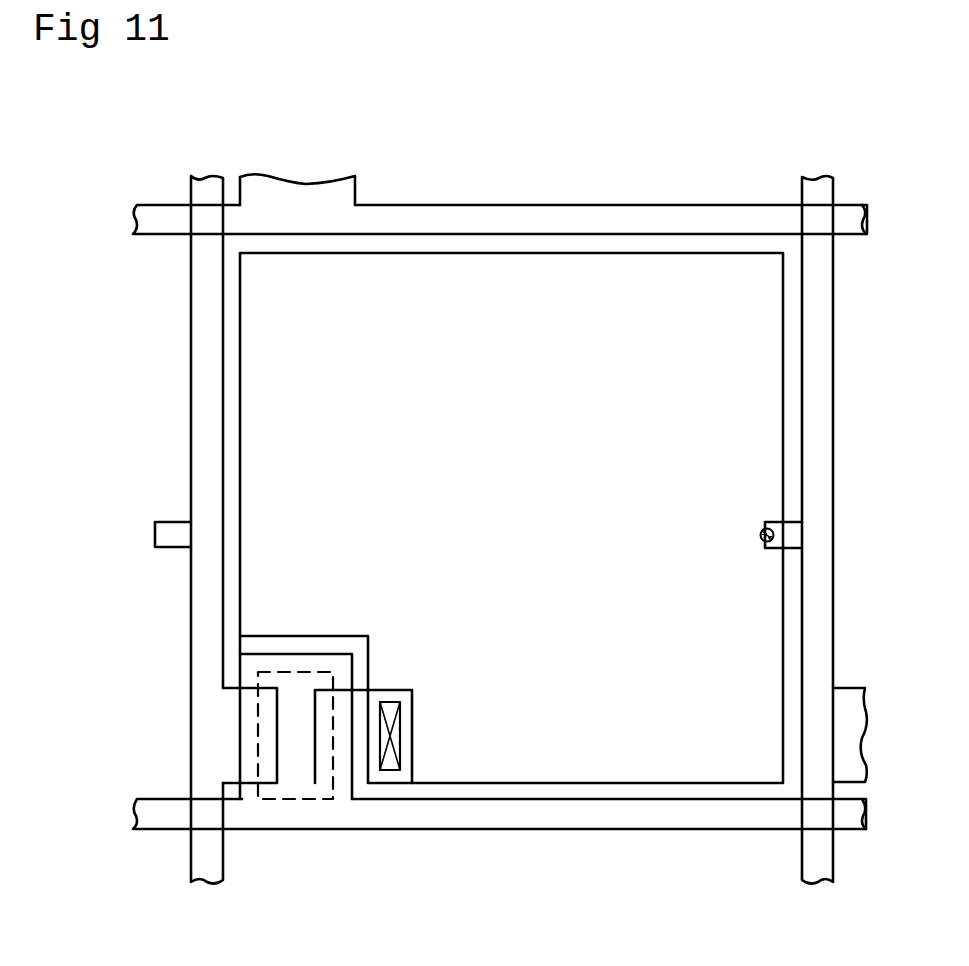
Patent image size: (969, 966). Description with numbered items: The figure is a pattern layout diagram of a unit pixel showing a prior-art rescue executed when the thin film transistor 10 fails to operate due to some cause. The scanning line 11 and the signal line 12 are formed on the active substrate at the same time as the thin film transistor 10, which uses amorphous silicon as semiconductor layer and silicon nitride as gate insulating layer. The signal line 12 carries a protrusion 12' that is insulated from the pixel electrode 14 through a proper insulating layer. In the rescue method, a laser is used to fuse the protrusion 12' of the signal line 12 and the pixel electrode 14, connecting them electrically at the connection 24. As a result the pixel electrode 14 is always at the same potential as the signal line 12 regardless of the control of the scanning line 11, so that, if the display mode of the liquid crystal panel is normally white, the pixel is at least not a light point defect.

The thin film transistor 10 is at (305, 697).
The scanning line 11 is at (145, 815).
The signal line 12 is at (207, 569).
The protrusion of the signal line 12' is at (155, 505).
The pixel electrode 14 is at (545, 253).
The electrical connection 24 is at (773, 533).